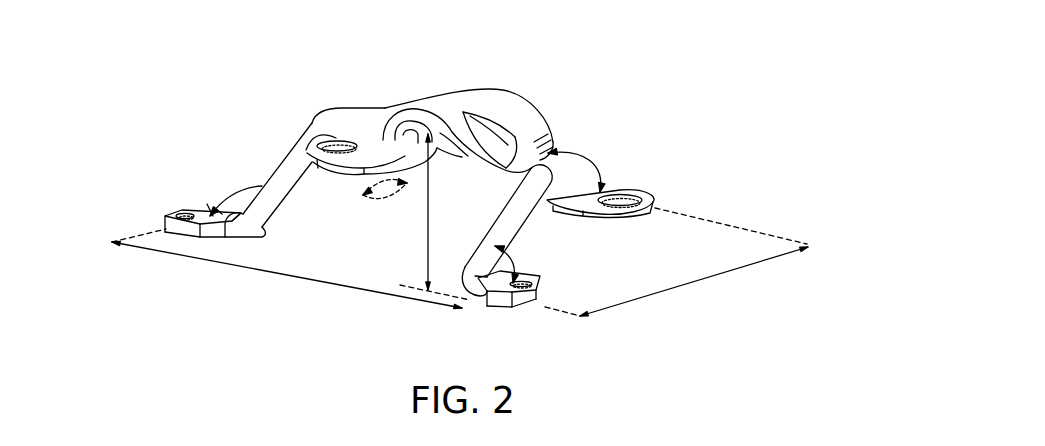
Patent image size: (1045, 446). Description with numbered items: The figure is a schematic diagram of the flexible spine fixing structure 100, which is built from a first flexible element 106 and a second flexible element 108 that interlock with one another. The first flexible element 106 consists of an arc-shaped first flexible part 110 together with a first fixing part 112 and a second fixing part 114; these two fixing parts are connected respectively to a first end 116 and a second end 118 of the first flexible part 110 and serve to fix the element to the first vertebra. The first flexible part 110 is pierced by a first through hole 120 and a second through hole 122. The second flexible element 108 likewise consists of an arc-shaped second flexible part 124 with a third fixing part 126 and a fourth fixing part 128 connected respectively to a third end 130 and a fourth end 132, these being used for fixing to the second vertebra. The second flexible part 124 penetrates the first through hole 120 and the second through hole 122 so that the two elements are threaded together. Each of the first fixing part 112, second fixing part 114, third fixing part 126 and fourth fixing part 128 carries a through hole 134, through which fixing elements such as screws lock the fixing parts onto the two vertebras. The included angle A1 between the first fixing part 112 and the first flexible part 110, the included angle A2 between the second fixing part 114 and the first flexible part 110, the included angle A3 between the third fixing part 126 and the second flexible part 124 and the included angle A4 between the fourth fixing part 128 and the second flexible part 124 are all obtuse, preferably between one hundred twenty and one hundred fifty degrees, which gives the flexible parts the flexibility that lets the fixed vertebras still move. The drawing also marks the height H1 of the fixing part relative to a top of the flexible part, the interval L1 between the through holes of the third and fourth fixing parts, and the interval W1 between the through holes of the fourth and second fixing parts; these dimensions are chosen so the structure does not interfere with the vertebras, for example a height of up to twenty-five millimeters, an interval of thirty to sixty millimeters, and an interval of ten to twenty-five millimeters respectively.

The flexible spine fixing structure 100 is at (752, 31).
The first flexible element 106 is at (512, 78).
The second flexible element 108 is at (286, 118).
The first flexible part 110 is at (517, 110).
The first fixing part 112 is at (367, 128).
The second fixing part 114 is at (604, 188).
The first end 116 is at (359, 187).
The second end 118 is at (546, 222).
The first through hole 120 is at (411, 139).
The second through hole 122 is at (478, 108).
The second flexible part 124 is at (290, 150).
The third fixing part 126 is at (168, 214).
The fourth fixing part 128 is at (514, 304).
The third end 130 is at (238, 194).
The fourth end 132 is at (473, 307).
The through hole 134 is at (181, 208).
The included angle A1 is at (385, 200).
The included angle A2 is at (576, 158).
The included angle A3 is at (228, 197).
The included angle A4 is at (517, 261).
The height H1 is at (410, 212).
The interval L1 is at (291, 269).
The interval W1 is at (676, 262).